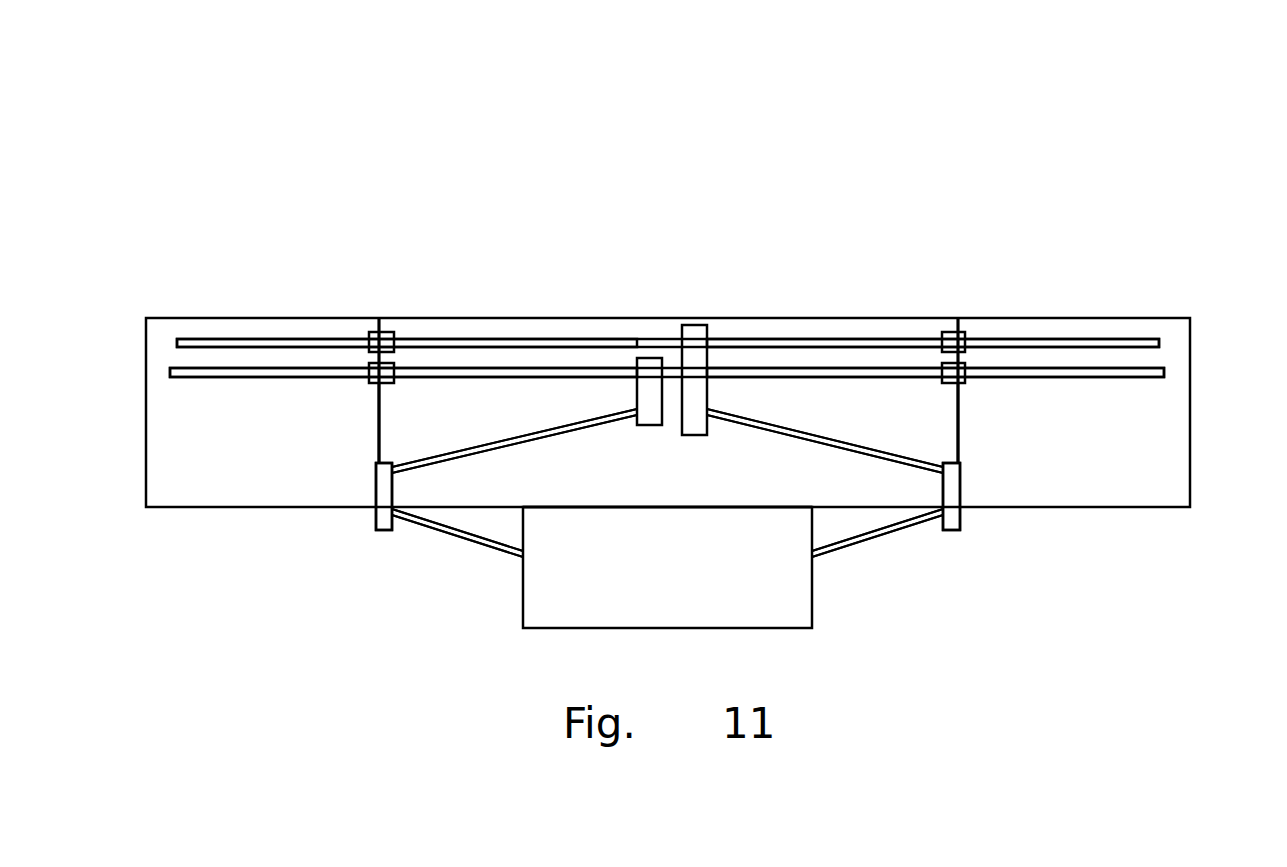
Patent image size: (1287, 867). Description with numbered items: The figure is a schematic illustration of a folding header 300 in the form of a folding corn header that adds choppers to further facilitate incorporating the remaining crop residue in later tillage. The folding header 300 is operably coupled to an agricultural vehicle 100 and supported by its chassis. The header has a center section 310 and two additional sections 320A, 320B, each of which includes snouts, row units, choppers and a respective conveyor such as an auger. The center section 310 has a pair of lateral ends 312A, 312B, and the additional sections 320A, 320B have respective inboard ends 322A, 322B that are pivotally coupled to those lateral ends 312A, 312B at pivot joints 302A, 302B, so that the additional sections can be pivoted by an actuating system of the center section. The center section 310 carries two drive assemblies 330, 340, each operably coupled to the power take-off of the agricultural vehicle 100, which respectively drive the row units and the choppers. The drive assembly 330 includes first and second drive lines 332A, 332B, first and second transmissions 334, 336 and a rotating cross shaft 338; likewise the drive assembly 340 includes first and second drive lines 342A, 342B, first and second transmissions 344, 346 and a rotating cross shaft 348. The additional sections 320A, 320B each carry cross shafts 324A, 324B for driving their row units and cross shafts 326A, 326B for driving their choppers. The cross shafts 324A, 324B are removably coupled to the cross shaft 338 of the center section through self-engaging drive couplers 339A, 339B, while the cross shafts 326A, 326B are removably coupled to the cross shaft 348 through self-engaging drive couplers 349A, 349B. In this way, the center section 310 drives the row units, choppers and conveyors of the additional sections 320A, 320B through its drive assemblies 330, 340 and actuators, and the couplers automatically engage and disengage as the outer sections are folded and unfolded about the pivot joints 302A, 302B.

The folding header 300 is at (278, 174).
The agricultural vehicle 100 is at (690, 593).
The center section 310 is at (688, 495).
The additional section 320A is at (297, 491).
The additional section 320B is at (1110, 491).
The inboard end 322A is at (351, 300).
The inboard end 322B is at (1002, 292).
The lateral end 312A is at (411, 300).
The lateral end 312B is at (941, 300).
The cross shaft 326A is at (214, 339).
The cross shaft 326B is at (1128, 339).
The cross shaft 324A is at (182, 378).
The cross shaft 324B is at (1156, 378).
The rotating cross shaft 348 is at (742, 339).
The rotating cross shaft 338 is at (572, 378).
The self-engaging drive coupler 349A is at (376, 332).
The self-engaging drive coupler 349B is at (945, 332).
The self-engaging drive coupler 339A is at (372, 385).
The self-engaging drive coupler 339B is at (965, 385).
The pivot joint 302A is at (377, 436).
The pivot joint 302B is at (958, 436).
The first transmission 334 is at (384, 522).
The first transmission 344 is at (952, 522).
The second transmission 336 is at (645, 358).
The second transmission 346 is at (695, 325).
The first drive line 332A is at (495, 552).
The second drive line 332B is at (493, 444).
The first drive line 342A is at (843, 551).
The second drive line 342B is at (841, 443).
The drive assembly 330 is at (413, 558).
The drive assembly 340 is at (930, 553).